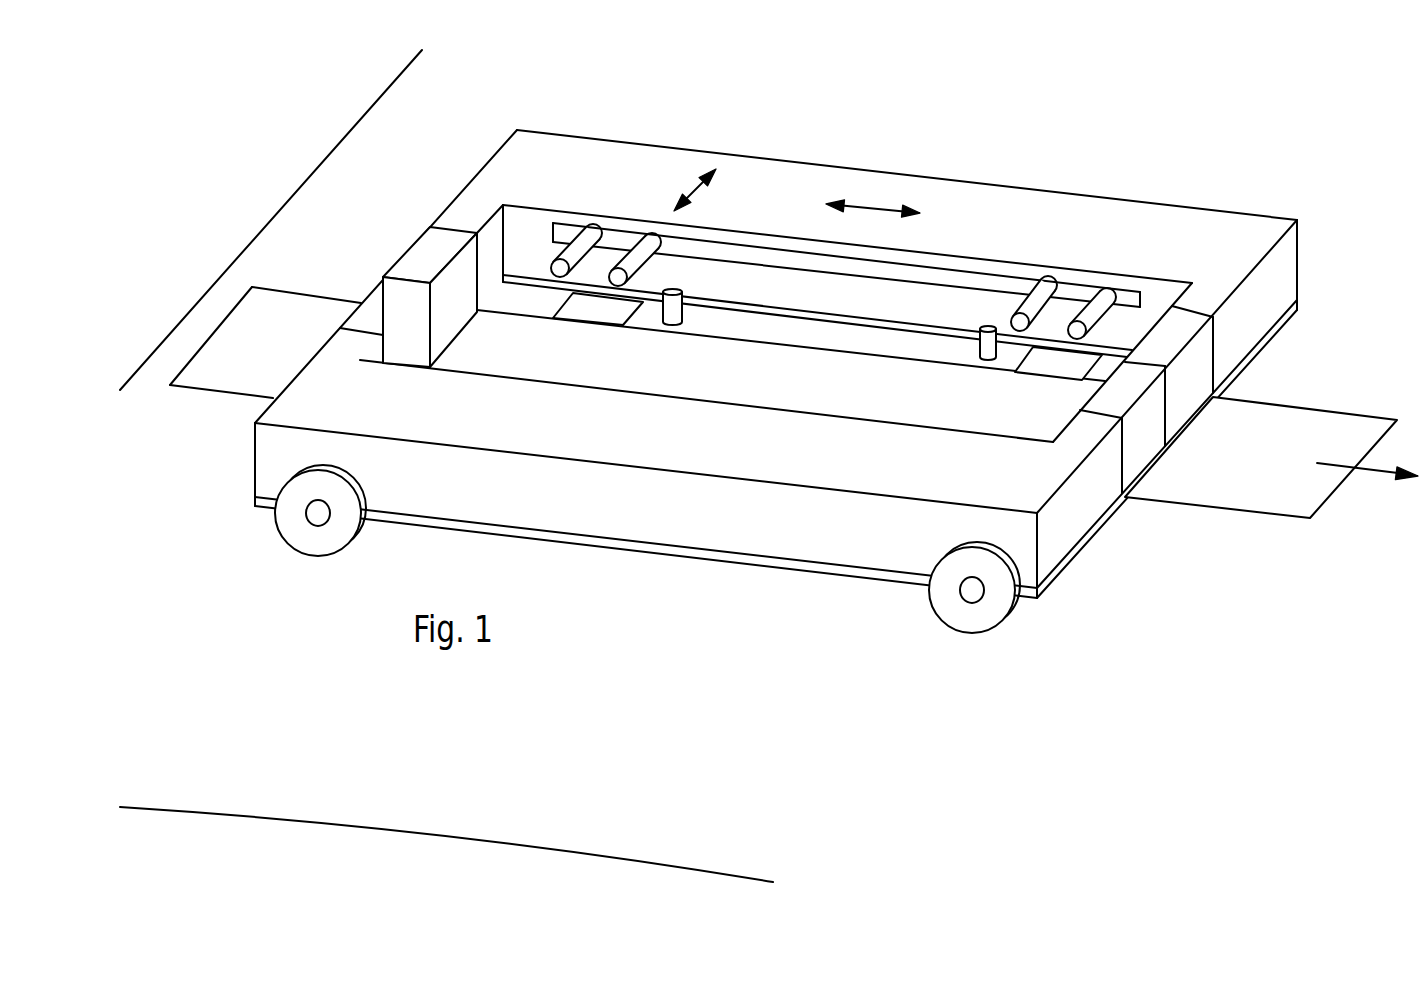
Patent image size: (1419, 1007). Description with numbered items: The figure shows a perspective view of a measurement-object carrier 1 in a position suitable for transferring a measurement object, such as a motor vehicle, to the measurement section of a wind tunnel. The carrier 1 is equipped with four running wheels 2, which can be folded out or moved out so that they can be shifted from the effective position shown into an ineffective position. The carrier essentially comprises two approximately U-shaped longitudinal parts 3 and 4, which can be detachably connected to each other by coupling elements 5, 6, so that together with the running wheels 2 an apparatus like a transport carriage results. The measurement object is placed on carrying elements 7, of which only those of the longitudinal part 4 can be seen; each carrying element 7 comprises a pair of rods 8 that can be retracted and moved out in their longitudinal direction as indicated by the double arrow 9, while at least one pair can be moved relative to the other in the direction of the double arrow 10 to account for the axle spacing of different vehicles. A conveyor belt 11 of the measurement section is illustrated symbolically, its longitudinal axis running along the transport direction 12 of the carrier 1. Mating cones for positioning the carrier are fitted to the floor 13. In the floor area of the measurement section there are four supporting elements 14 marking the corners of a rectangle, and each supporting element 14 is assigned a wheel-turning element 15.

The measurement-object carrier 1 is at (794, 388).
The running wheels 2 is at (302, 535).
The longitudinal part 3 is at (678, 515).
The longitudinal part 4 is at (810, 182).
The coupling element 5 is at (410, 267).
The coupling element 6 is at (1180, 393).
The carrying elements 7 is at (610, 240).
The rods 8 is at (1037, 308).
The double arrow 9 is at (680, 204).
The double arrow 10 is at (877, 208).
The conveyor belt 11 is at (1250, 482).
The transport direction 12 is at (1370, 473).
The floor 13 is at (1256, 565).
The supporting elements 14 is at (683, 310).
The wheel-turning element 15 is at (580, 305).